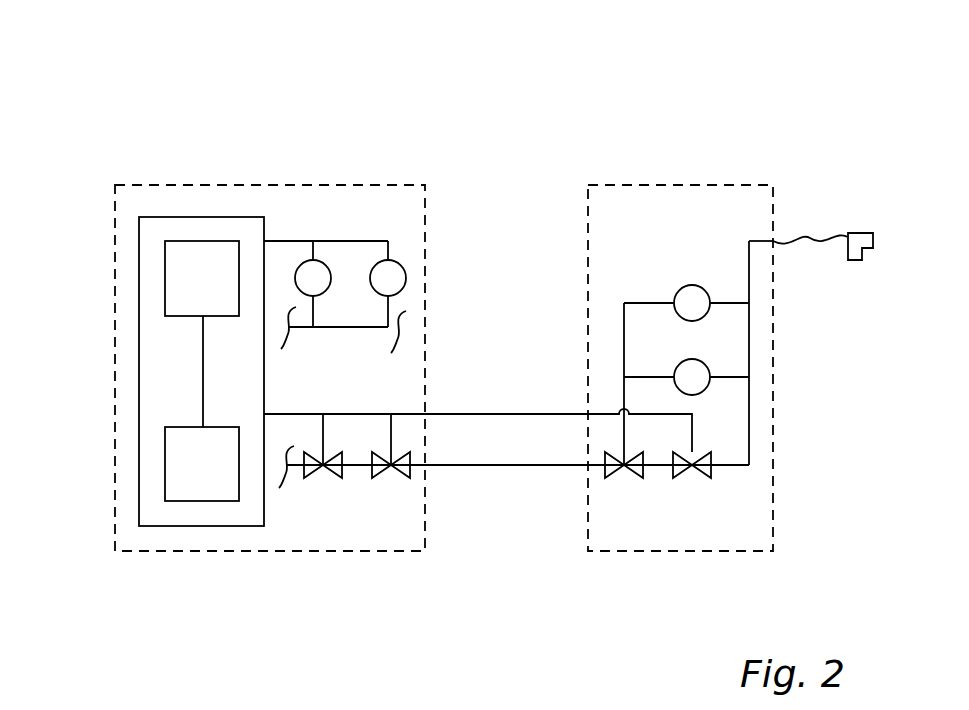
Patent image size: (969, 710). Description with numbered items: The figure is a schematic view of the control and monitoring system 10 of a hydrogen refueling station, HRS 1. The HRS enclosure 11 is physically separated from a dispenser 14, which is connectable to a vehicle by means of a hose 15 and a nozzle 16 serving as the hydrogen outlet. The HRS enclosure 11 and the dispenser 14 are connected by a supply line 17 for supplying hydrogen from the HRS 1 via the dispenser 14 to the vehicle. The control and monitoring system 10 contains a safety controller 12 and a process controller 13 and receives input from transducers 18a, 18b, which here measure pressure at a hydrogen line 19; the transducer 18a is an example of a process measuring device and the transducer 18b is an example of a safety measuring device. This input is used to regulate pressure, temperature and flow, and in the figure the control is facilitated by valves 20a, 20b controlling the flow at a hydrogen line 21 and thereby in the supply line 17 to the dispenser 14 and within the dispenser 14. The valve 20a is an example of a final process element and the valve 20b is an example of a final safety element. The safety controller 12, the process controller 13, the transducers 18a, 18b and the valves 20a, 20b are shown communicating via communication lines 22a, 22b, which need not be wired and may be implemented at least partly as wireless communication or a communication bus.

The HRS 1 is at (570, 83).
The control and monitoring system 10 is at (197, 217).
The HRS enclosure 11 is at (282, 185).
The safety controller 12 is at (216, 295).
The process controller 13 is at (216, 483).
The dispenser 14 is at (660, 185).
The hose 15 is at (810, 240).
The nozzle 16 is at (862, 233).
The supply line 17 is at (485, 467).
The transducer 18a is at (402, 266).
The transducer 18b is at (327, 262).
The hydrogen line 19 is at (358, 329).
The valve 20a is at (391, 467).
The valve 20b is at (322, 467).
The hydrogen line 21 is at (358, 414).
The communication line 22a is at (203, 368).
The communication line 22b is at (307, 242).